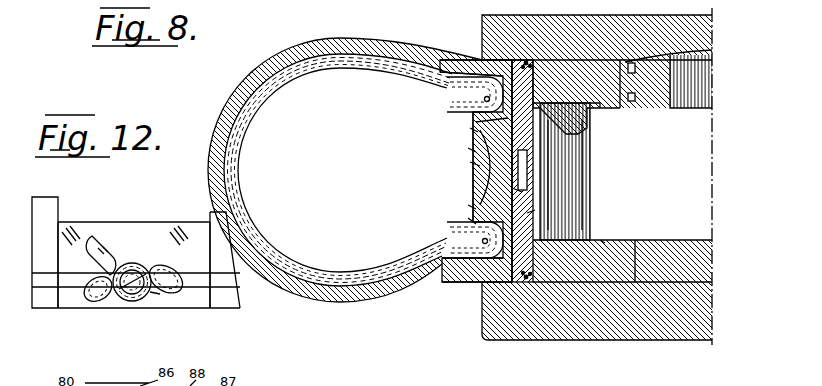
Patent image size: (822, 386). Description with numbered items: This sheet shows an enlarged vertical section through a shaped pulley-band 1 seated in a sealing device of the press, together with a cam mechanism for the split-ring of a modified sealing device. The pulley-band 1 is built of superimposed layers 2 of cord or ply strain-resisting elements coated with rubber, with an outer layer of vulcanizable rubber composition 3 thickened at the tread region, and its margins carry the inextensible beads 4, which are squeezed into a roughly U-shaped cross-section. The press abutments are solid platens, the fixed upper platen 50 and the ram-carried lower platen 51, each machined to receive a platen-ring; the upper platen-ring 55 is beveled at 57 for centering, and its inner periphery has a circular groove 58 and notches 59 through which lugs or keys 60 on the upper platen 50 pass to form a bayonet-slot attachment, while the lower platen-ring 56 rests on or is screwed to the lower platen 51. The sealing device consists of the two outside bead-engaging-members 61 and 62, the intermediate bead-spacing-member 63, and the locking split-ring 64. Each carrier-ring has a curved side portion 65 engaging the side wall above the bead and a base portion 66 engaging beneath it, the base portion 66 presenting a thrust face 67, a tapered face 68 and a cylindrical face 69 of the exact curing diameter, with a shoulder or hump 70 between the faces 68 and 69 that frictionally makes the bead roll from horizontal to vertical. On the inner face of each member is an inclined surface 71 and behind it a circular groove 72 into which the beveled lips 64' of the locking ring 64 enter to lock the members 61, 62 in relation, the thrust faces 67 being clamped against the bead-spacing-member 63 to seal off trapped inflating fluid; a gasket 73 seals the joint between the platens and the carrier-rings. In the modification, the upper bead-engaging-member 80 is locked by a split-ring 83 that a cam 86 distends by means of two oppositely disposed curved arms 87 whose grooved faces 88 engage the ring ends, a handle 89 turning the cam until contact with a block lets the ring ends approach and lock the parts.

In FIG. 8, the pulley-band 1 is at (246, 74).
In FIG. 8, the superimposed layers 2 is at (310, 67).
In FIG. 8, the outer layer of vulcanizable rubber composition 3 is at (267, 58).
In FIG. 8, the inextensible beads 4 is at (470, 110).
In FIG. 8, the upper platen 50 is at (703, 32).
In FIG. 8, the lower platen 51 is at (698, 305).
In FIG. 8, the upper platen-ring 55 is at (605, 111).
In FIG. 8, the lower platen-ring 56 is at (620, 241).
In FIG. 8, the bevel 57 is at (543, 141).
In FIG. 8, the circular groove 58 is at (630, 109).
In FIG. 8, the notches 59 is at (700, 51).
In FIG. 8, the lugs or keys 60 is at (655, 78).
In FIG. 8, the upper bead-engaging-member 61 is at (457, 58).
In FIG. 8, the lower bead-engaging-member 62 is at (442, 285).
In FIG. 8, the intermediate bead-spacing-member 63 is at (472, 178).
In FIG. 8, the locking split-ring 64 is at (589, 171).
In FIG. 8, the lips 64' is at (511, 185).
In FIG. 8, the side portions 65 is at (440, 88).
In FIG. 8, the base portions 66 is at (472, 162).
In FIG. 8, the thrust face 67 is at (518, 190).
In FIG. 8, the tapered face 68 is at (470, 150).
In FIG. 8, the cylindrical face 69 is at (466, 57).
In FIG. 8, the shoulder or hump 70 is at (472, 130).
In FIG. 8, the inclined surface 71 is at (600, 149).
In FIG. 8, the circular groove or channel 72 is at (505, 124).
In FIG. 8, the gasket 73 is at (530, 60).
In FIG. 12, the upper bead-engaging-member 80 is at (48, 212).
In FIG. 12, the split-ring 83 is at (196, 262).
In FIG. 12, the cam 86 is at (137, 264).
In FIG. 12, the curved arms 87 is at (96, 297).
In FIG. 12, the grooved faces 88 is at (164, 294).
In FIG. 12, the handle 89 is at (100, 240).